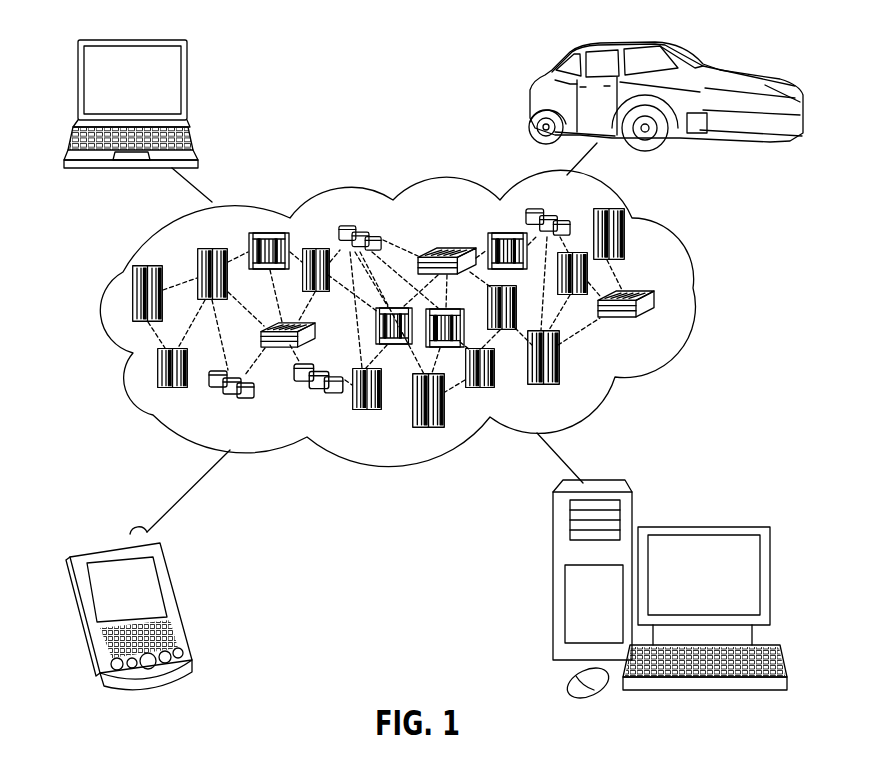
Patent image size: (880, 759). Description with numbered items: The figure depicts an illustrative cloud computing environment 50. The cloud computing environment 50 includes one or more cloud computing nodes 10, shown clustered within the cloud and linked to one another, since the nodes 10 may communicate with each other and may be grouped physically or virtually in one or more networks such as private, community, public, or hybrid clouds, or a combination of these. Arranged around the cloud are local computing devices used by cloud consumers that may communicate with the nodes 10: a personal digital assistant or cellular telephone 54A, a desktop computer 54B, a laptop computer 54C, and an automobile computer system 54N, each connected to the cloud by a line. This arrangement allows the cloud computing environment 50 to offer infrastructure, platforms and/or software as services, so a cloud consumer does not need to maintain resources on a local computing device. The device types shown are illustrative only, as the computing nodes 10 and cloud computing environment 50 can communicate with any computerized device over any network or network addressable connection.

The cloud computing node 10 is at (657, 322).
The cloud computing environment 50 is at (426, 318).
The personal digital assistant or cellular telephone 54A is at (180, 600).
The desktop computer 54B is at (702, 525).
The laptop computer 54C is at (190, 86).
The automobile computer system 54N is at (532, 100).